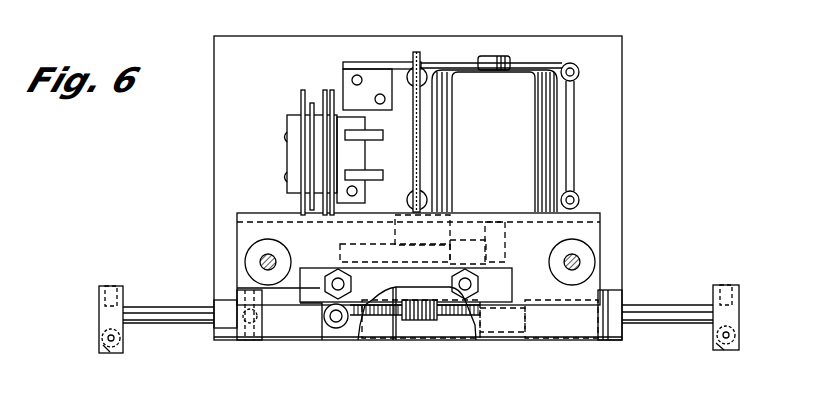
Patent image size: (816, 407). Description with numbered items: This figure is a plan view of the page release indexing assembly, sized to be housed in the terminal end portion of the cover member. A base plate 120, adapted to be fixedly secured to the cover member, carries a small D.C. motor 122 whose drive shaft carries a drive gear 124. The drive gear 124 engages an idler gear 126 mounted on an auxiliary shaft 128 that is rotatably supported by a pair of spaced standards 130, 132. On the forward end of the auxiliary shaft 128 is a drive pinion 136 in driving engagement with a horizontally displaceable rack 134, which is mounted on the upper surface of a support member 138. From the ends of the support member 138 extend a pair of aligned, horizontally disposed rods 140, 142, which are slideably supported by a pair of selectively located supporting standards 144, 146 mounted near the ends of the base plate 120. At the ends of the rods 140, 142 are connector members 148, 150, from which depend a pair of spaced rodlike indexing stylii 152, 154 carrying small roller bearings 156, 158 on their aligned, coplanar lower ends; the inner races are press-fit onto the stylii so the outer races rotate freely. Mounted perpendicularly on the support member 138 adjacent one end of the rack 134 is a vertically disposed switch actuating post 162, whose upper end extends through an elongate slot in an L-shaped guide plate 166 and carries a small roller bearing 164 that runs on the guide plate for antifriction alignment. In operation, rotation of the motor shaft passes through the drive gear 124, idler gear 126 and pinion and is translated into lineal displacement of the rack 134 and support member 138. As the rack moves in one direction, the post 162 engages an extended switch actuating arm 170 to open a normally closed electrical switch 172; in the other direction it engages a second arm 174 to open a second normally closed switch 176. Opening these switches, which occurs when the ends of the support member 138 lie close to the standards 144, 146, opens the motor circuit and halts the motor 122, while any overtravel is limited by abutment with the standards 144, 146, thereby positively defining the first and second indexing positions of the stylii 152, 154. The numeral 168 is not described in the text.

The base plate 120 is at (628, 62).
The D.C. motor 122 is at (525, 137).
The drive gear 124 is at (515, 258).
The idler gear 126 is at (456, 213).
The auxiliary shaft 128 is at (420, 166).
The standard 130 is at (360, 68).
The standard 132 is at (392, 240).
The rack 134 is at (462, 312).
The drive pinion 136 is at (424, 322).
The support member 138 is at (508, 330).
The rod 140 is at (176, 302).
The rod 142 is at (652, 306).
The supporting standard 144 is at (212, 298).
The supporting standard 146 is at (612, 296).
The connector member 148 is at (100, 310).
The connector member 150 is at (740, 310).
The indexing stylus 152 is at (122, 342).
The indexing stylus 154 is at (736, 340).
The roller bearing 156 is at (104, 350).
The roller bearing 158 is at (718, 352).
The switch actuating post 162 is at (327, 320).
The roller bearing 164 is at (339, 328).
The L-shaped guide plate 166 is at (506, 274).
The base plate 168 is at (600, 232).
The switch actuating arm 170 is at (395, 322).
The electrical switch 172 is at (326, 280).
The switch actuating arm 174 is at (252, 326).
The electrical switch 176 is at (292, 252).